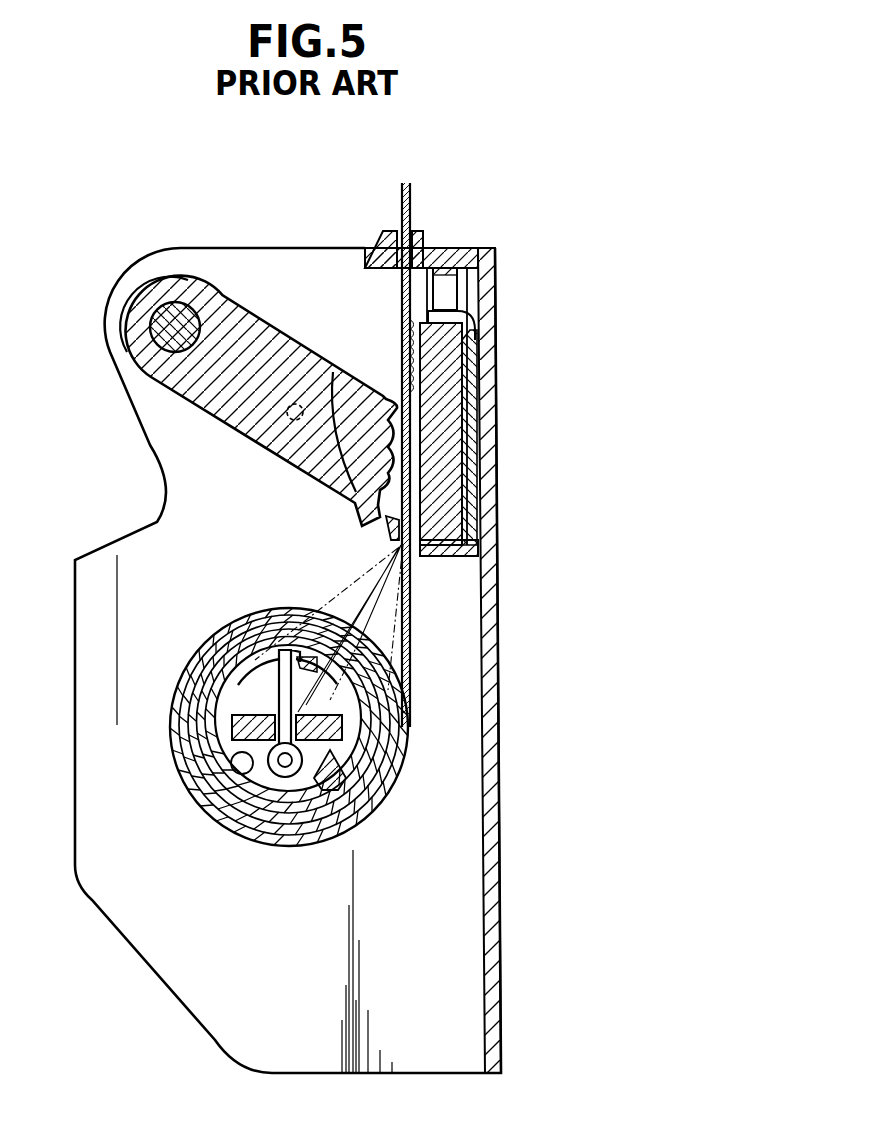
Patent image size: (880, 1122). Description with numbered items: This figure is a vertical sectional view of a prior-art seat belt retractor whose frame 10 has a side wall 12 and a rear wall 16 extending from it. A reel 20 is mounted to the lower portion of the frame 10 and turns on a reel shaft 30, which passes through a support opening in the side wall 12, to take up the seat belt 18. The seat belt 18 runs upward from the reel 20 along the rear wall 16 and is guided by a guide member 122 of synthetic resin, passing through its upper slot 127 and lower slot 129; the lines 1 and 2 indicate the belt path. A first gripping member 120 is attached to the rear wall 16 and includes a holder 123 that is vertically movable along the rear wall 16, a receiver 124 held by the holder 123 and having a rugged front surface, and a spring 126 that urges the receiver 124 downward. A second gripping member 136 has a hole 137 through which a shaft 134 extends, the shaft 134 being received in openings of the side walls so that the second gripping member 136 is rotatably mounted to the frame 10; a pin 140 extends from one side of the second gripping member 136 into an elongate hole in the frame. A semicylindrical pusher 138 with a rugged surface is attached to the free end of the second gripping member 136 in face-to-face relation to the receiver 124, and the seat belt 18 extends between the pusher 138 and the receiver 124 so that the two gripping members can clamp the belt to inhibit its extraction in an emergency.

The tape path (dash-dot) 1 is at (392, 626).
The tape path 2 is at (356, 586).
The frame 10 is at (509, 830).
The side wall 12 is at (150, 946).
The rear wall 16 is at (497, 731).
The seat belt 18 is at (389, 184).
The reel 20 is at (214, 798).
The reel shaft 30 is at (342, 728).
The first gripping member 120 is at (452, 566).
The guide member 122 is at (452, 557).
The holder 123 is at (468, 412).
The receiver 124 is at (466, 330).
The spring 126 is at (447, 293).
The upper slot 127 is at (405, 232).
The lower slot 129 is at (396, 544).
The shaft 134 is at (152, 337).
The second gripping member 136 is at (239, 322).
The hole 137 is at (158, 368).
The semicylindrical pusher 138 is at (347, 427).
The pin 140 is at (294, 421).